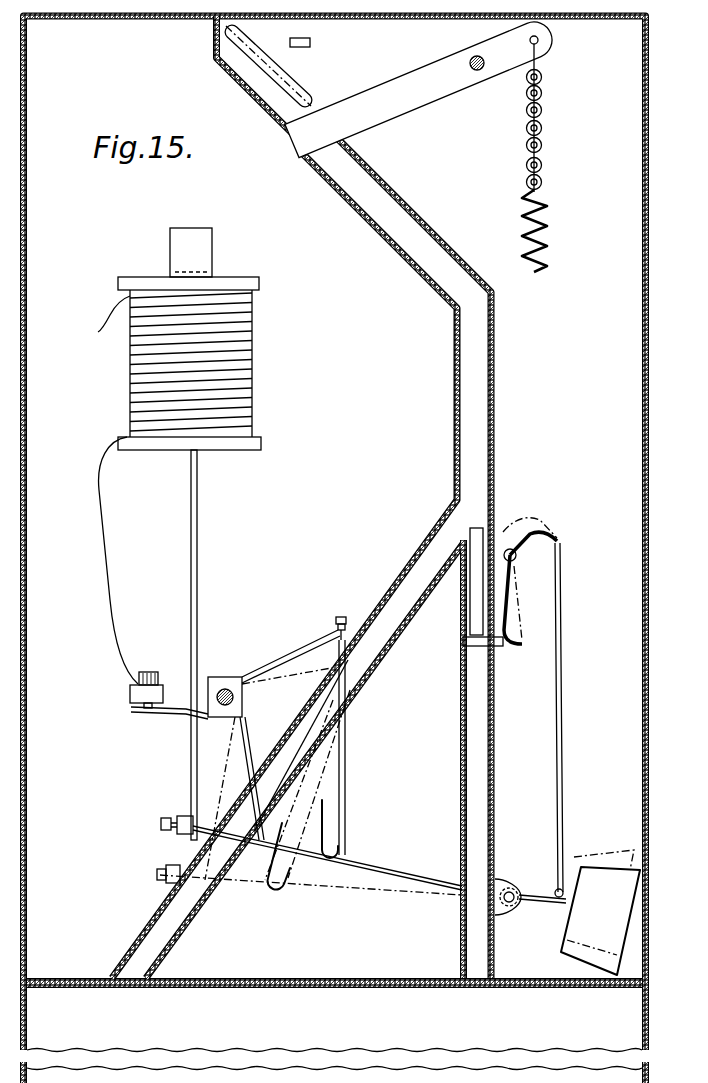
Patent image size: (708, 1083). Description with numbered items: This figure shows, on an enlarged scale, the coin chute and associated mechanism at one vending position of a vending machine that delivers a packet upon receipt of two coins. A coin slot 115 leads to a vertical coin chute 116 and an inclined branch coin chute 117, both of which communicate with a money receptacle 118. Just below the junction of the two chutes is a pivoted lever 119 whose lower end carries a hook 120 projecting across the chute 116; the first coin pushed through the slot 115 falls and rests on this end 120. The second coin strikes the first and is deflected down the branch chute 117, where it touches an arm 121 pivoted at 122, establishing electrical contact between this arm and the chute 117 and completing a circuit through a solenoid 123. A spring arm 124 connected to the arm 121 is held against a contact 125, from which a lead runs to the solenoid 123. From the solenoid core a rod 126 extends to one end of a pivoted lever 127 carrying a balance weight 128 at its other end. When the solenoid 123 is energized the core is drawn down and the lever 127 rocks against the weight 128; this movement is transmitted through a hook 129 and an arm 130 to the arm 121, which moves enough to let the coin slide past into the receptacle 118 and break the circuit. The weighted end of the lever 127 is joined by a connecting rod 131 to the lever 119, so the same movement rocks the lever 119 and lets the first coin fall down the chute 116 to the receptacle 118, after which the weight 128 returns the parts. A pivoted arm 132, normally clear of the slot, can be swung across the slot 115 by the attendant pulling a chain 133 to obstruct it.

The coin slot 115 is at (291, 70).
The vertical coin chute 116 is at (493, 400).
The inclined branch coin chute 117 is at (455, 527).
The money receptacle 118 is at (334, 1026).
The pivoted lever 119 is at (507, 628).
The hook 120 is at (462, 638).
The arm 121 is at (247, 753).
The pivot 122 is at (218, 683).
The solenoid 123 is at (246, 353).
The spring arm 124 is at (131, 710).
The contact 125 is at (130, 692).
The rod 126 is at (200, 555).
The pivoted lever 127 is at (407, 873).
The balance weight 128 is at (592, 862).
The hook 129 is at (348, 776).
The arm 130 is at (297, 648).
The connecting rod 131 is at (561, 718).
The pivoted arm 132 is at (456, 88).
The chain 133 is at (545, 150).